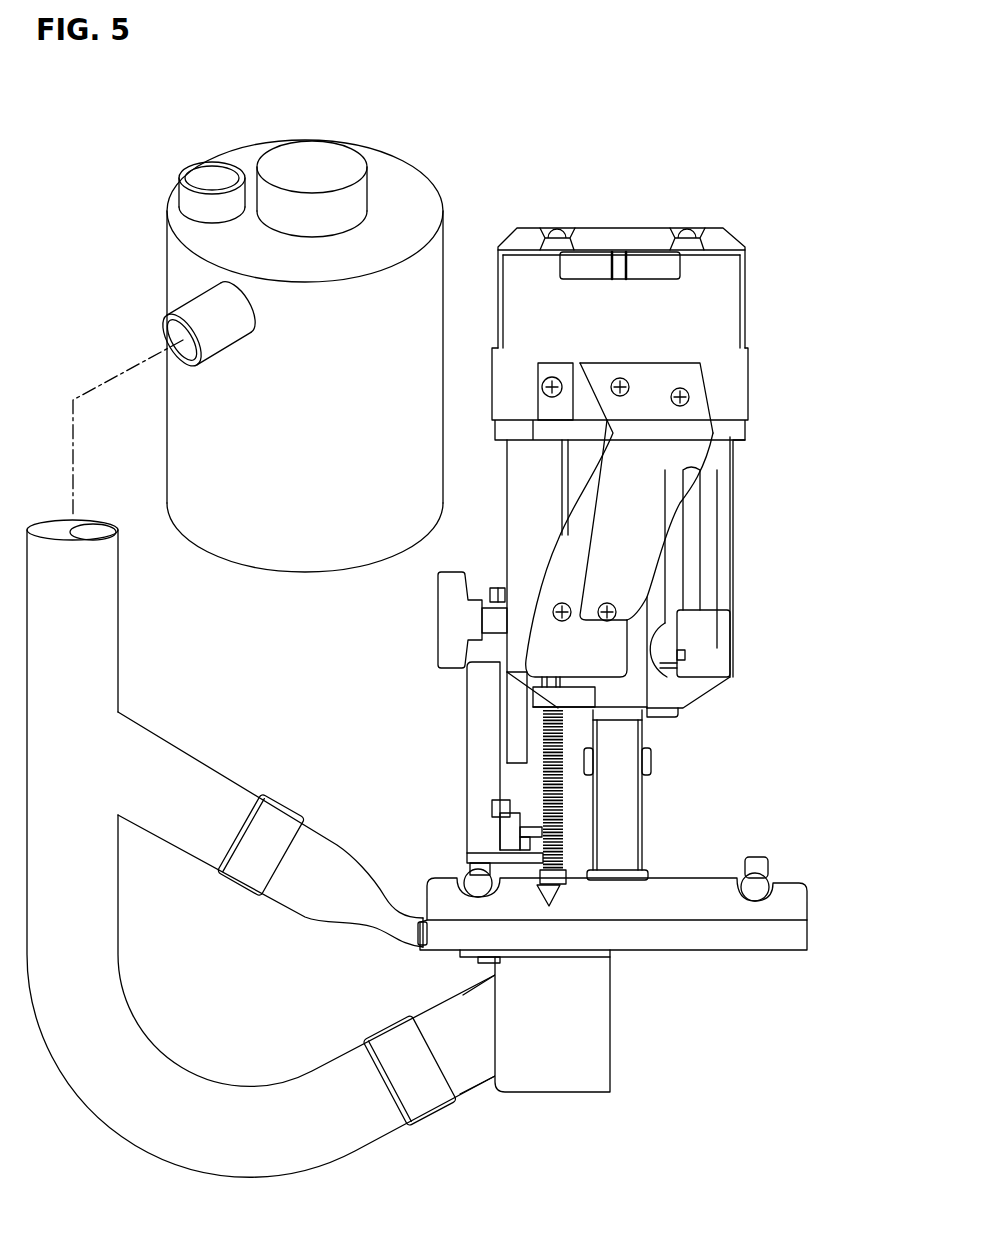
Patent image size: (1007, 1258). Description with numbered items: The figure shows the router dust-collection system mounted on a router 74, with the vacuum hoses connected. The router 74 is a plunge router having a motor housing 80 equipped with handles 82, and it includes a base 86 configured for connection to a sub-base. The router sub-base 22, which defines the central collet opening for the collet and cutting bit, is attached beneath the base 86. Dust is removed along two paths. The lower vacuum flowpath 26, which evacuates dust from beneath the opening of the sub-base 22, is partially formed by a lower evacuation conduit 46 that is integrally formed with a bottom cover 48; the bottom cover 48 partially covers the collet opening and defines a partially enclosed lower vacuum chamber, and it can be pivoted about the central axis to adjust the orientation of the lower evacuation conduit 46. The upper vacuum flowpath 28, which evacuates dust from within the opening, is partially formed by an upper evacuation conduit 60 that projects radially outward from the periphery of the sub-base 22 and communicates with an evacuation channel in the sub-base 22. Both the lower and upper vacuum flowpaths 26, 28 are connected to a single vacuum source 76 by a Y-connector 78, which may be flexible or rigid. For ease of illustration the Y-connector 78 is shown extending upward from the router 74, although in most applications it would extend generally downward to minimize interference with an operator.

The router sub-base 22 is at (748, 953).
The lower vacuum flowpath 26 is at (433, 1008).
The upper vacuum flowpath 28 is at (390, 893).
The lower evacuation conduit 46 is at (473, 1083).
The bottom cover 48 is at (567, 1093).
The upper evacuation conduit 60 is at (327, 835).
The router 74 is at (636, 567).
The vacuum source 76 is at (420, 172).
The Y-connector 78 is at (183, 748).
The motor housing 80 is at (745, 287).
The handles 82 is at (665, 463).
The base 86 is at (802, 883).